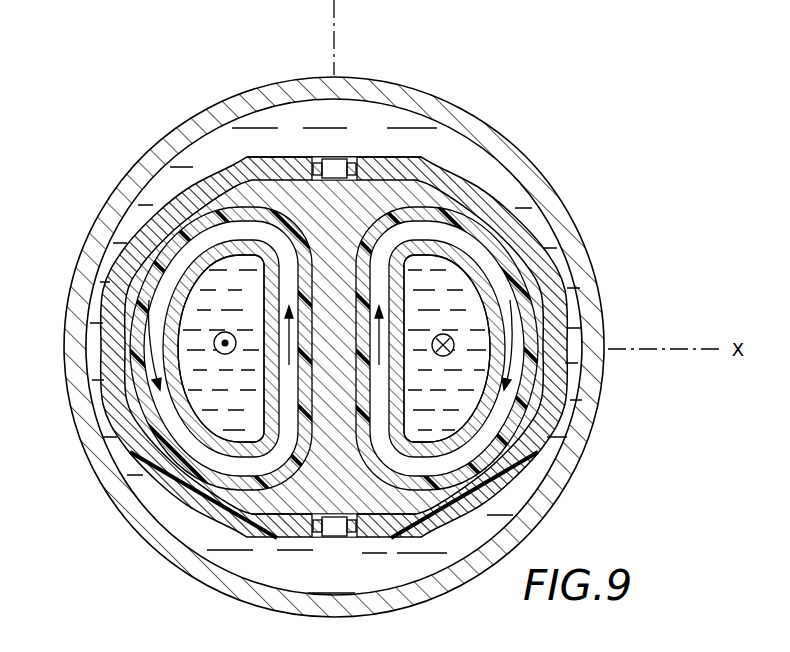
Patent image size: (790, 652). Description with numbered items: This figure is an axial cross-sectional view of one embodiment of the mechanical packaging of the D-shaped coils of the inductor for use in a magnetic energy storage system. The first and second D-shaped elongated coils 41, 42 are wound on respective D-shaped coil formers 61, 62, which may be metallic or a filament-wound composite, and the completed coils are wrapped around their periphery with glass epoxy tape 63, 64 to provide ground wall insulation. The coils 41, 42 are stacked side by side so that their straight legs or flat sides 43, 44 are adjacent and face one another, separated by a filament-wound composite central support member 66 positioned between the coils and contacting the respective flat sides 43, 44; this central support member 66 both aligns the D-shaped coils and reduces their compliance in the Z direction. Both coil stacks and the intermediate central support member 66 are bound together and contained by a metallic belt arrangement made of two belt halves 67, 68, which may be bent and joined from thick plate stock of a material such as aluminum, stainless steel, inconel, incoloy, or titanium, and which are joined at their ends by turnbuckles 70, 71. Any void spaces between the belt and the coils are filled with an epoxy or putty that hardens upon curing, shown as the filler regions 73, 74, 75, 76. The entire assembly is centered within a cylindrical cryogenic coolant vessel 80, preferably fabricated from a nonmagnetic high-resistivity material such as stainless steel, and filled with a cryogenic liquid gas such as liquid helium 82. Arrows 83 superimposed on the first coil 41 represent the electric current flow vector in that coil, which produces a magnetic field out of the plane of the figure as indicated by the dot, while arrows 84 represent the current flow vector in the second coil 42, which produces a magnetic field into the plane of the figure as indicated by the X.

The first D-shaped elongated coil 41 is at (170, 280).
The second D-shaped elongated coil 42 is at (551, 236).
The flat side of first coil 43 is at (293, 272).
The flat side of second coil 44 is at (383, 272).
The D-shaped coil former 61 is at (200, 275).
The D-shaped coil former 62 is at (479, 292).
The glass epoxy tape 63 is at (162, 420).
The glass epoxy tape 64 is at (532, 316).
The central support member 66 is at (298, 520).
The belt half 67 is at (200, 512).
The belt half 68 is at (507, 478).
The turnbuckle 70 is at (340, 158).
The turnbuckle 71 is at (338, 533).
The epoxy or putty filler 73 is at (243, 190).
The epoxy or putty filler 74 is at (494, 178).
The epoxy or putty filler 75 is at (287, 510).
The epoxy or putty filler 76 is at (433, 500).
The cylindrical cryogenic coolant vessel 80 is at (451, 113).
The liquid helium 82 is at (417, 420).
The arrows 83 is at (287, 345).
The arrows 84 is at (510, 353).